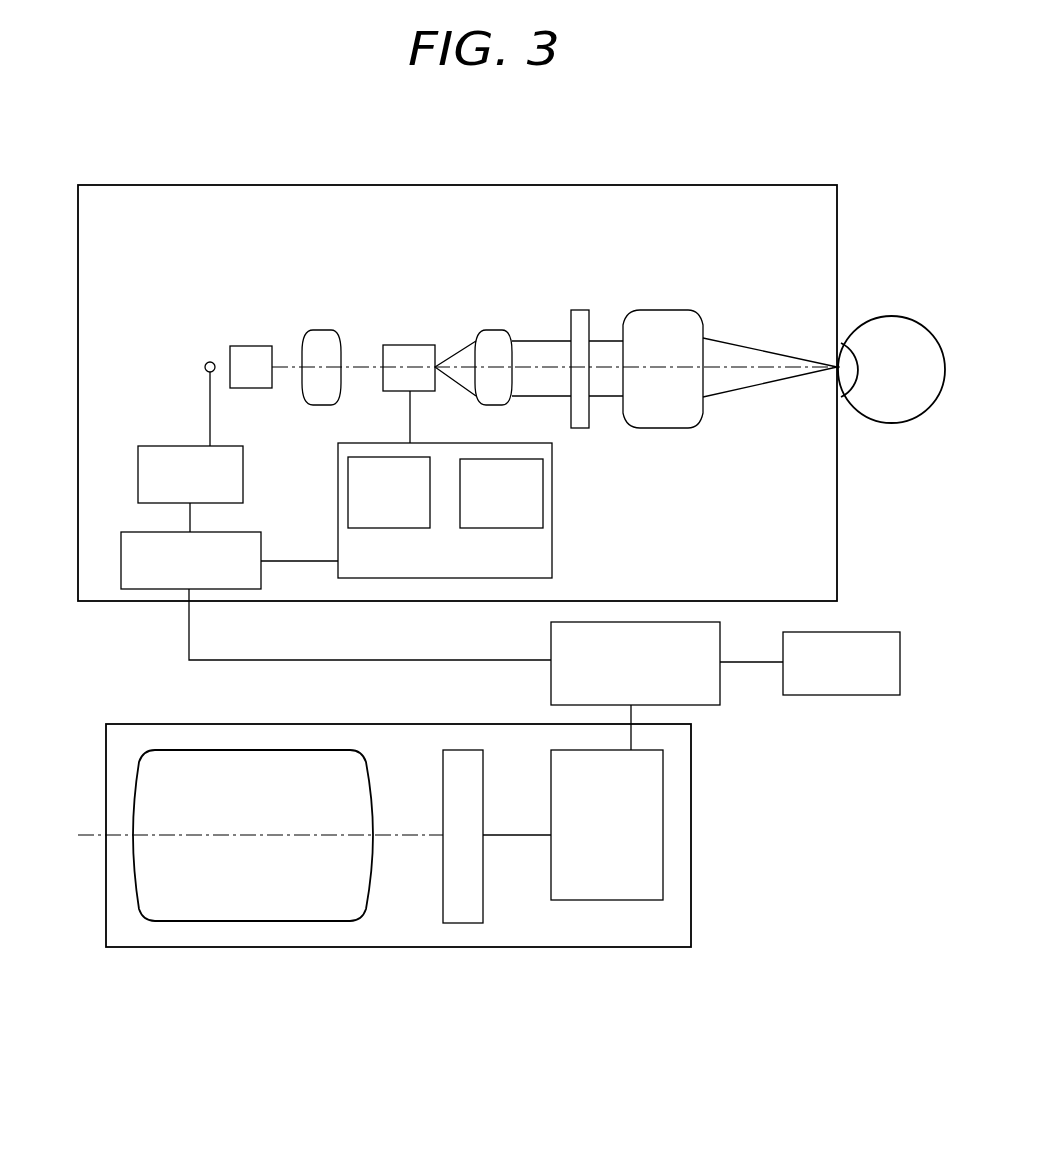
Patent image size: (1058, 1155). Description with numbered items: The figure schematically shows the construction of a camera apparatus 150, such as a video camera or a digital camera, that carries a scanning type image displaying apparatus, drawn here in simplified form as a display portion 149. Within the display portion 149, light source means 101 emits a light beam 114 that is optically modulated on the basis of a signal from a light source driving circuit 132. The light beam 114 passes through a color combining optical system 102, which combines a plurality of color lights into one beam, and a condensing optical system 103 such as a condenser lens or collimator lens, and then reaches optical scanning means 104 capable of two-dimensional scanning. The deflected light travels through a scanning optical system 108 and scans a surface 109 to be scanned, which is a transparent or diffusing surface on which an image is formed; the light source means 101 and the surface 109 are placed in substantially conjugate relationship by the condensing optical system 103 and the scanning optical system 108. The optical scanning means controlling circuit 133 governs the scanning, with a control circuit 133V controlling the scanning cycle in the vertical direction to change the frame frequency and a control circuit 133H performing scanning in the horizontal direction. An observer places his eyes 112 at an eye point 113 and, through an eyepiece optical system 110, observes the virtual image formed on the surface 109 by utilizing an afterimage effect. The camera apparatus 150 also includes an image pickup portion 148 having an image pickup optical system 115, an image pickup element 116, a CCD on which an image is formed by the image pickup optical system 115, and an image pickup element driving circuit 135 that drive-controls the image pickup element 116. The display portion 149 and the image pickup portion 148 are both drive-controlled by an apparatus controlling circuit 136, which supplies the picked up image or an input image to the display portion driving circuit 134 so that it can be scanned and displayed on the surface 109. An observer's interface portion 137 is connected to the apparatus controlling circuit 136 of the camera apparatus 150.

The light source means 101 is at (205, 362).
The color combining optical system 102 is at (257, 346).
The condensing optical system 103 is at (322, 330).
The optical scanning means 104 is at (408, 345).
The scanning optical system 108 is at (492, 330).
The surface to be scanned 109 is at (583, 310).
The eyepiece optical system 110 is at (666, 315).
The eyes 112 is at (903, 402).
The eye point 113 is at (836, 366).
The light beam 114 is at (549, 368).
The image pickup optical system 115 is at (287, 900).
The image pickup element 116 is at (460, 923).
The light source driving circuit 132 is at (190, 474).
The optical scanning means controlling circuit 133 is at (445, 510).
The control circuit for horizontal scanning 133H is at (389, 492).
The control circuit for vertical scanning 133V is at (501, 493).
The display portion driving circuit 134 is at (336, 581).
The image pickup element driving circuit 135 is at (607, 825).
The apparatus controlling circuit 136 is at (667, 686).
The observer's interface portion 137 is at (841, 663).
The image pickup portion 148 is at (196, 938).
The display portion 149 is at (288, 200).
The camera apparatus 150 is at (625, 960).